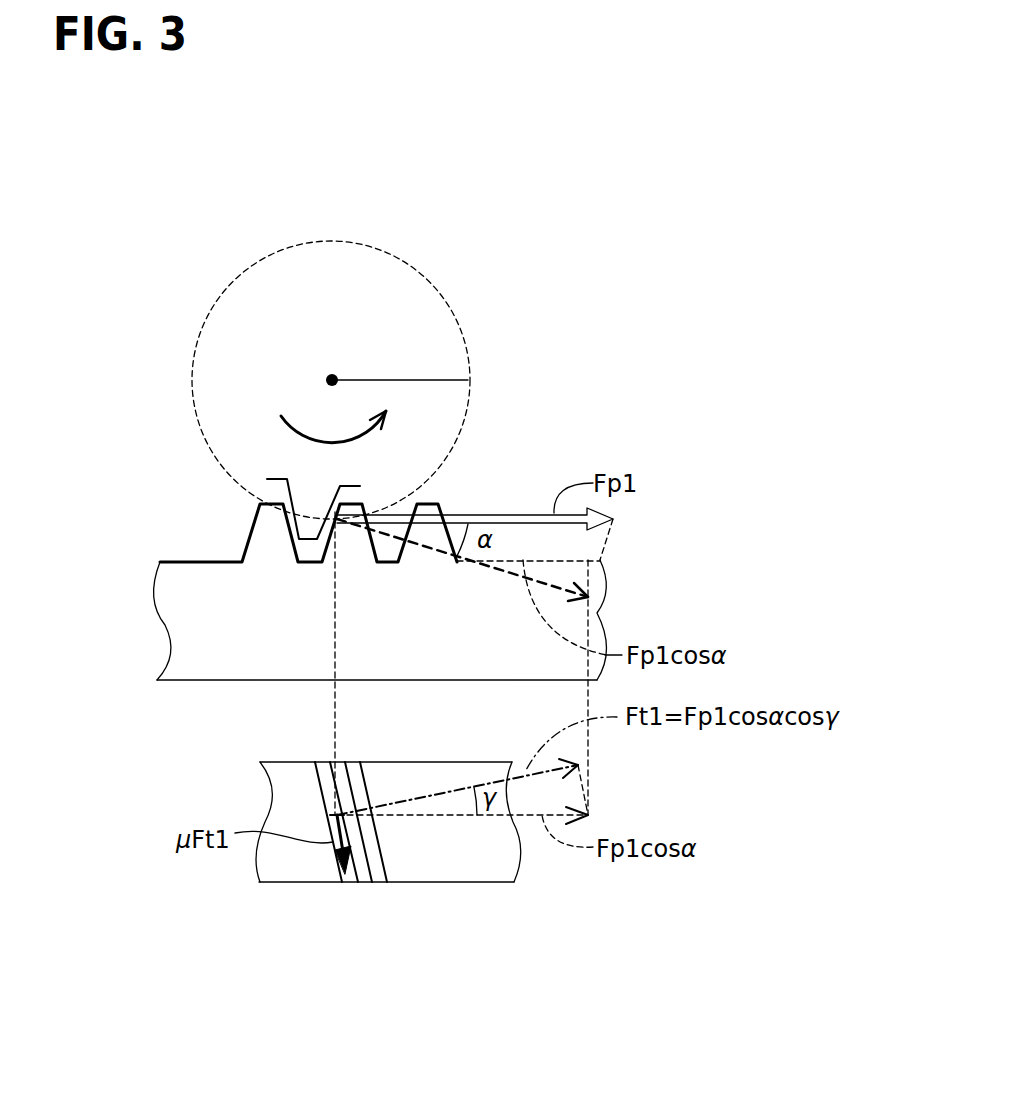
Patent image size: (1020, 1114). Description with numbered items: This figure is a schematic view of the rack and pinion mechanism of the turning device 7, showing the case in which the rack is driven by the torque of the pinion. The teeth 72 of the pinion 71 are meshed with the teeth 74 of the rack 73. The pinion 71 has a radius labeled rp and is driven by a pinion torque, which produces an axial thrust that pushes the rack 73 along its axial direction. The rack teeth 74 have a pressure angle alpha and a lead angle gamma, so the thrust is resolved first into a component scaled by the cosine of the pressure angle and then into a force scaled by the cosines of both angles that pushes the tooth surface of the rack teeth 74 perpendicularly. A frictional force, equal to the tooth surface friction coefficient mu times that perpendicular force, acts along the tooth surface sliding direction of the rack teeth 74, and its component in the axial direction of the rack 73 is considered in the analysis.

The turning device 7 is at (345, 366).
The pinion 71 is at (230, 282).
The teeth of pinion 72 is at (308, 497).
The rack 73 is at (232, 667).
The rack teeth 74 is at (263, 542).